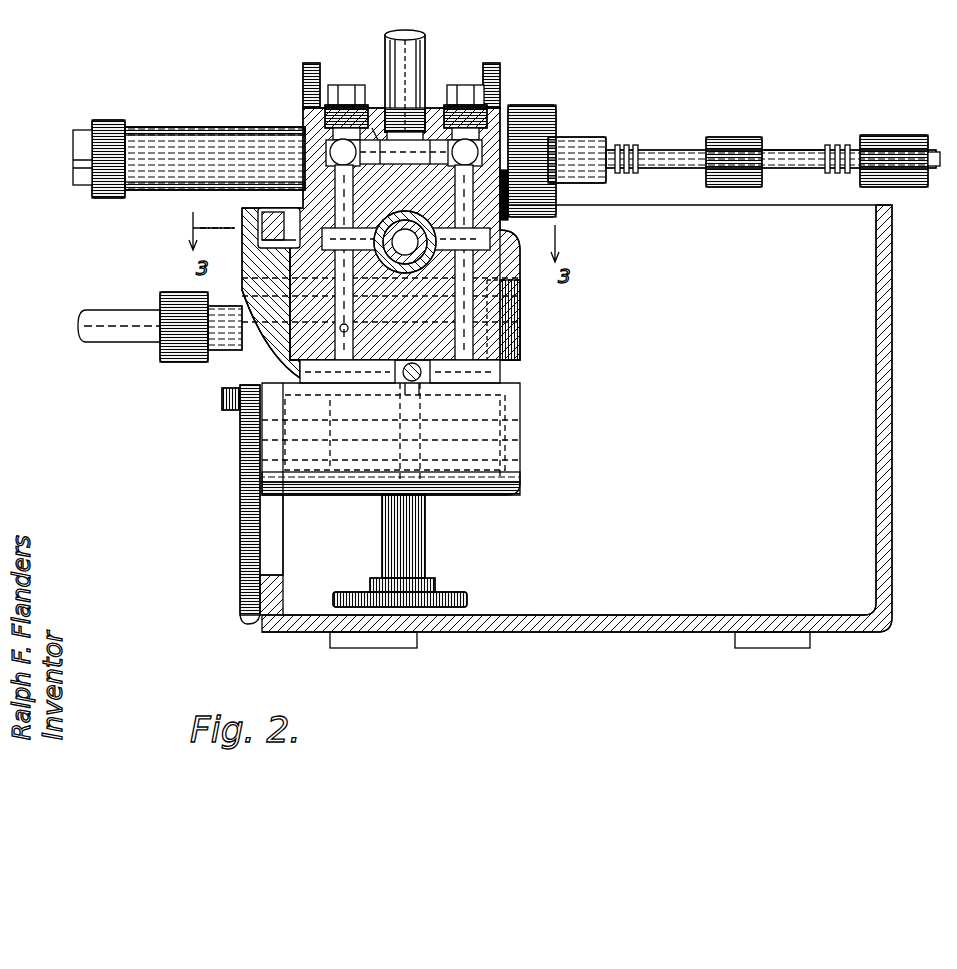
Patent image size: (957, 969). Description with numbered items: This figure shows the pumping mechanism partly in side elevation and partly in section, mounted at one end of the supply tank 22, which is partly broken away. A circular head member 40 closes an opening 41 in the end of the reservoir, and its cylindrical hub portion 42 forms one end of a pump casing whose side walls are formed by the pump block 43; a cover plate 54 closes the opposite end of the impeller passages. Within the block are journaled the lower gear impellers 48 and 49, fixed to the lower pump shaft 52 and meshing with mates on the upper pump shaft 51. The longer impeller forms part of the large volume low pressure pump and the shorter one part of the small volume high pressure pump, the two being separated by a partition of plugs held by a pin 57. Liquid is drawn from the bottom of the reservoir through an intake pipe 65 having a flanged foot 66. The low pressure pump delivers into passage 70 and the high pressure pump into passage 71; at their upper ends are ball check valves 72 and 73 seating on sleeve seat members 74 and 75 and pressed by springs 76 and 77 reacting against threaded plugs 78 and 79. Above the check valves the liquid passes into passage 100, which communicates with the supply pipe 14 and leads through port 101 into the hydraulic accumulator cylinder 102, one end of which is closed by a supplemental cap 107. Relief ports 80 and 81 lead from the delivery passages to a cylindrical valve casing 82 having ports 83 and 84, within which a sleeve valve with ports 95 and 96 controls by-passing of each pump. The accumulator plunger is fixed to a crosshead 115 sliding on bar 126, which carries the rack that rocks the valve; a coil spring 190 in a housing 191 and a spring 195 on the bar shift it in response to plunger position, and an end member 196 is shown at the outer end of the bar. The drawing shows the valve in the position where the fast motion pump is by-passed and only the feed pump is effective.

The supply pipe 14 is at (422, 60).
The supply tank 22 is at (877, 383).
The circular head member 40 is at (240, 548).
The opening 41 is at (280, 532).
The cylindrical hub portion 42 is at (258, 483).
The pump block 43 is at (472, 492).
The gear impeller 48 is at (345, 440).
The gear impeller 49 is at (505, 447).
The upper pump shaft 51 is at (95, 310).
The lower pump shaft 52 is at (258, 434).
The cover plate 54 is at (522, 335).
The pin 57 is at (420, 388).
The intake pipe 65 is at (425, 565).
The flanged foot 66 is at (467, 597).
The passage 70 is at (318, 385).
The passage 71 is at (495, 372).
The ball check valve 72 is at (303, 130).
The ball check valve 73 is at (530, 108).
The sleeve seat member 74 is at (305, 178).
The sleeve seat member 75 is at (530, 198).
The spring 76 is at (328, 150).
The spring 77 is at (483, 95).
The threaded plug 78 is at (346, 86).
The threaded plug 79 is at (470, 88).
The relief port 80 is at (300, 248).
The relief port 81 is at (545, 232).
The cylindrical valve casing 82 is at (520, 262).
The port 83 is at (270, 225).
The port 84 is at (495, 235).
The port 95 is at (292, 358).
The port 96 is at (570, 150).
The passage 100 is at (372, 128).
The port 101 is at (405, 163).
The hydraulic accumulator cylinder 102 is at (155, 128).
The supplemental cap 107 is at (73, 167).
The crosshead 115 is at (737, 138).
The bar 126 is at (790, 150).
The coil spring 190 is at (652, 157).
The housing 191 is at (630, 148).
The spring 195 is at (843, 148).
The knob 196 is at (890, 135).